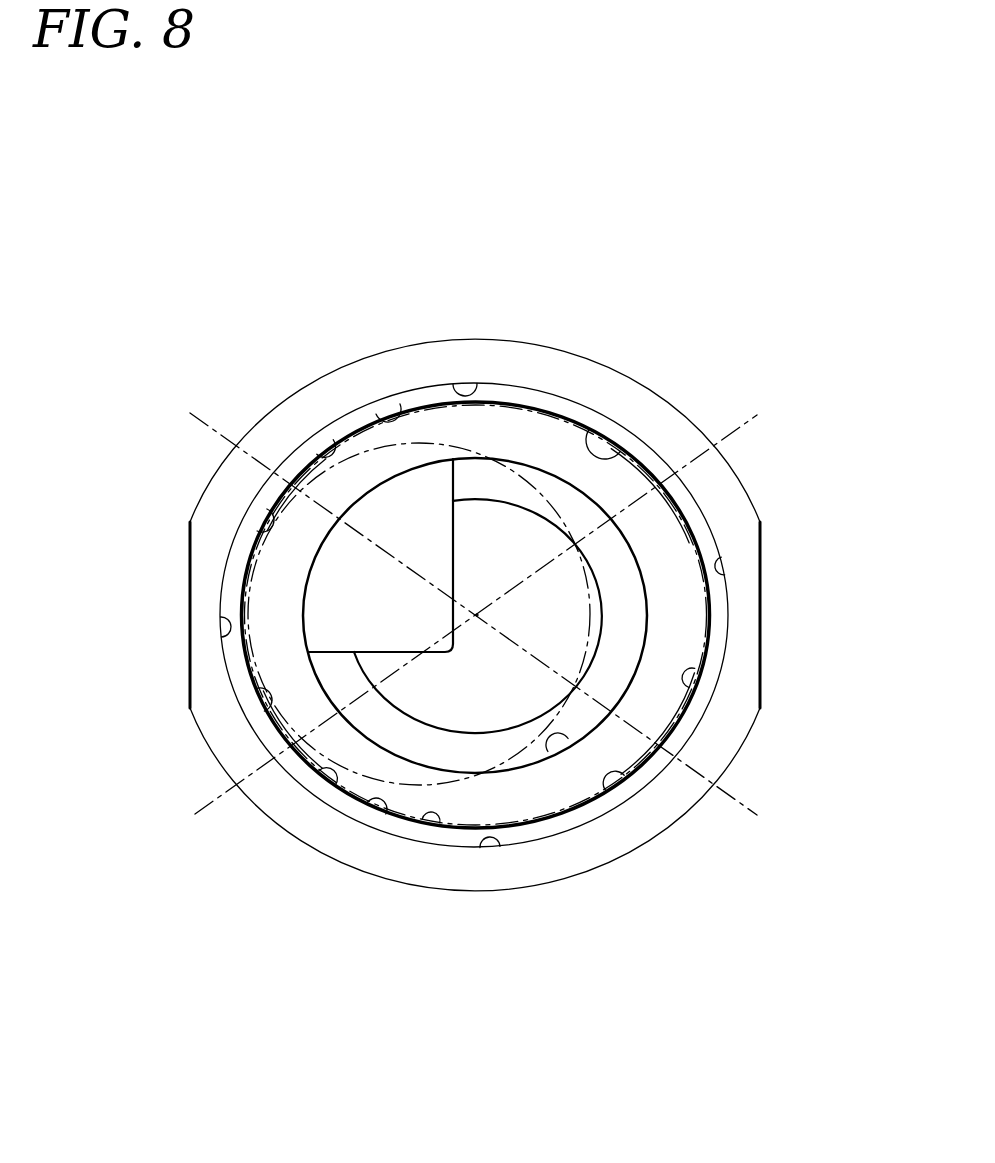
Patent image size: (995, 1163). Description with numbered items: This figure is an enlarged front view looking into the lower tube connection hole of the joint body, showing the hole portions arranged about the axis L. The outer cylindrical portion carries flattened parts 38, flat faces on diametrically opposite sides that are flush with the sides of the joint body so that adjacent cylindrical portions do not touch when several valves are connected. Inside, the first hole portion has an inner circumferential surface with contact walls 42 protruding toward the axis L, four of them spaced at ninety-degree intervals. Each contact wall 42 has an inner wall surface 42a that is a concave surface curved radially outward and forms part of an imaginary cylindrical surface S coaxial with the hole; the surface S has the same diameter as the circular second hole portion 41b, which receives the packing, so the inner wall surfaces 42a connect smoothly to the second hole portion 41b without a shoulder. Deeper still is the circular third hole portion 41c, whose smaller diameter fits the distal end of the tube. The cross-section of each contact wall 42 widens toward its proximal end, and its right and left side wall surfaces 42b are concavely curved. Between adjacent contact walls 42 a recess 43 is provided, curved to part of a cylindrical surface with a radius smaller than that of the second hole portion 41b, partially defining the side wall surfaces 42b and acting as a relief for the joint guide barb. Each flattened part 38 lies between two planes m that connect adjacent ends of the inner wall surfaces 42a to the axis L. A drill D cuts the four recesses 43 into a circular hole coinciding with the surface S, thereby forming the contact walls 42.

The flattened part 38 is at (190, 585).
The recess 43 is at (455, 384).
The second hole portion 41b is at (436, 830).
The third hole portion 41c is at (551, 752).
The contact wall 42 is at (290, 484).
The inner wall surface 42a is at (330, 445).
The side wall surface 42b is at (405, 407).
The imaginary cylindrical surface S is at (710, 608).
The drill D is at (518, 480).
The axis L is at (477, 620).
The plane m is at (491, 607).